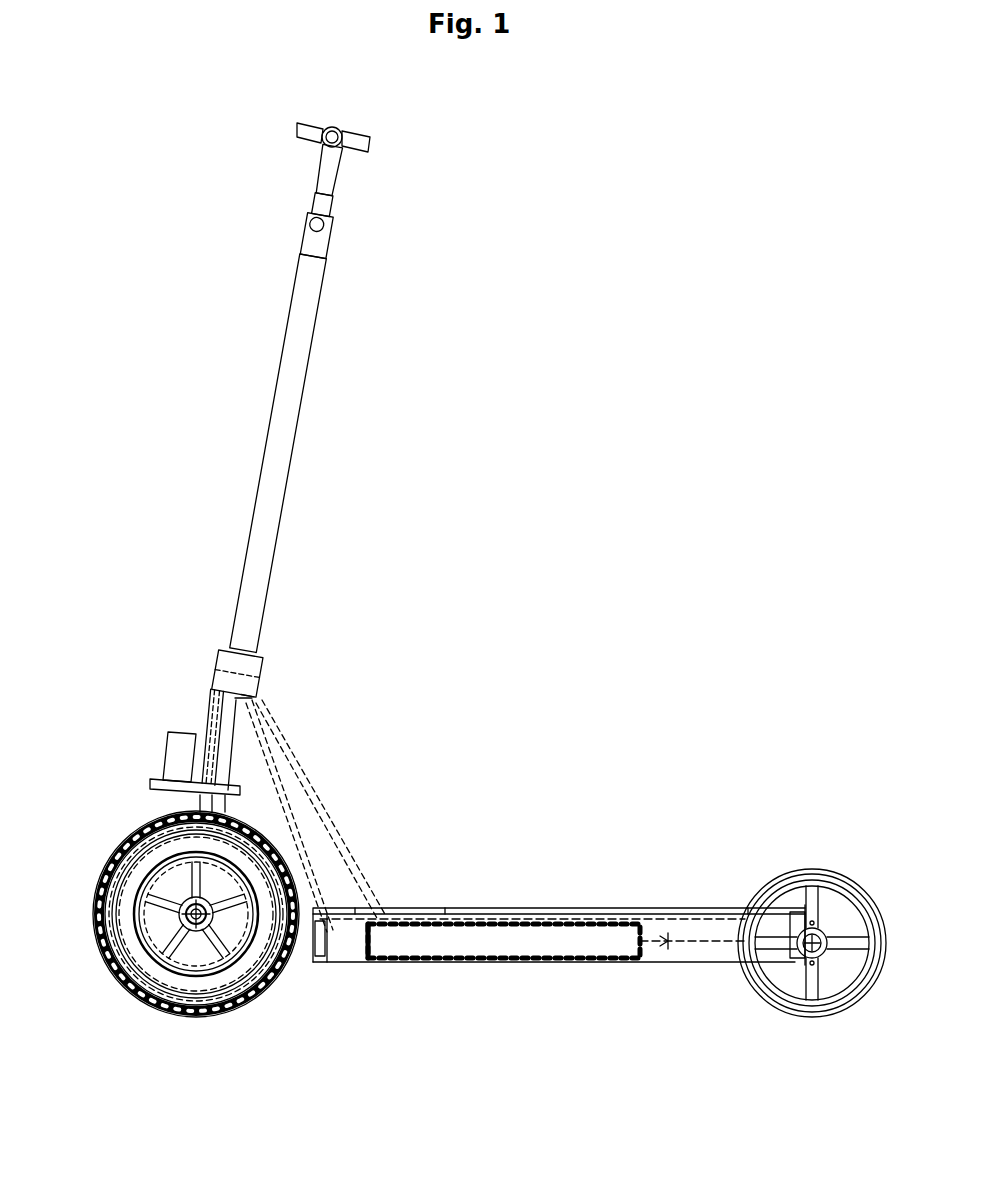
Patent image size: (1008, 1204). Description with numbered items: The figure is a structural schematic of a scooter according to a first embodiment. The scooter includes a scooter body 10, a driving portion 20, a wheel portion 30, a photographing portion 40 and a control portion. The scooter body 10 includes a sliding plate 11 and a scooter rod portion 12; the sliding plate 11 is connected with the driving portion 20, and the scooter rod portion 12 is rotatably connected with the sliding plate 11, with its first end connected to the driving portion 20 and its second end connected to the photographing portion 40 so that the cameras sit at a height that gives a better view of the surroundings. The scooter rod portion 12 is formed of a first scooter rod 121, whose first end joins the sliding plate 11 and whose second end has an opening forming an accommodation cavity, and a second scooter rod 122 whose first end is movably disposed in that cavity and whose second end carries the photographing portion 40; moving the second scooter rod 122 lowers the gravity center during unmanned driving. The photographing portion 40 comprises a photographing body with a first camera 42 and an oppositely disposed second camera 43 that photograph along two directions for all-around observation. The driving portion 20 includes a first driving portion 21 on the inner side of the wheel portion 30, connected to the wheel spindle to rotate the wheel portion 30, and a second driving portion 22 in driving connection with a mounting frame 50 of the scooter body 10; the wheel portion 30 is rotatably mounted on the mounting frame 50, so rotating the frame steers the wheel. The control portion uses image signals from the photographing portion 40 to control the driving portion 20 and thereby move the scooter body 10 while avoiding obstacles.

The scooter body 10 is at (762, 826).
The sliding plate 11 is at (660, 932).
The scooter rod portion 12 is at (460, 572).
The first scooter rod 121 is at (218, 682).
The second scooter rod 122 is at (262, 556).
The driving portion 20 is at (243, 973).
The first driving portion 21 is at (140, 865).
The second driving portion 22 is at (168, 755).
The wheel portion 30 is at (132, 987).
The photographing portion 40 is at (195, 128).
The first camera 42 is at (300, 252).
The second camera 43 is at (327, 255).
The mounting frame 50 is at (192, 870).